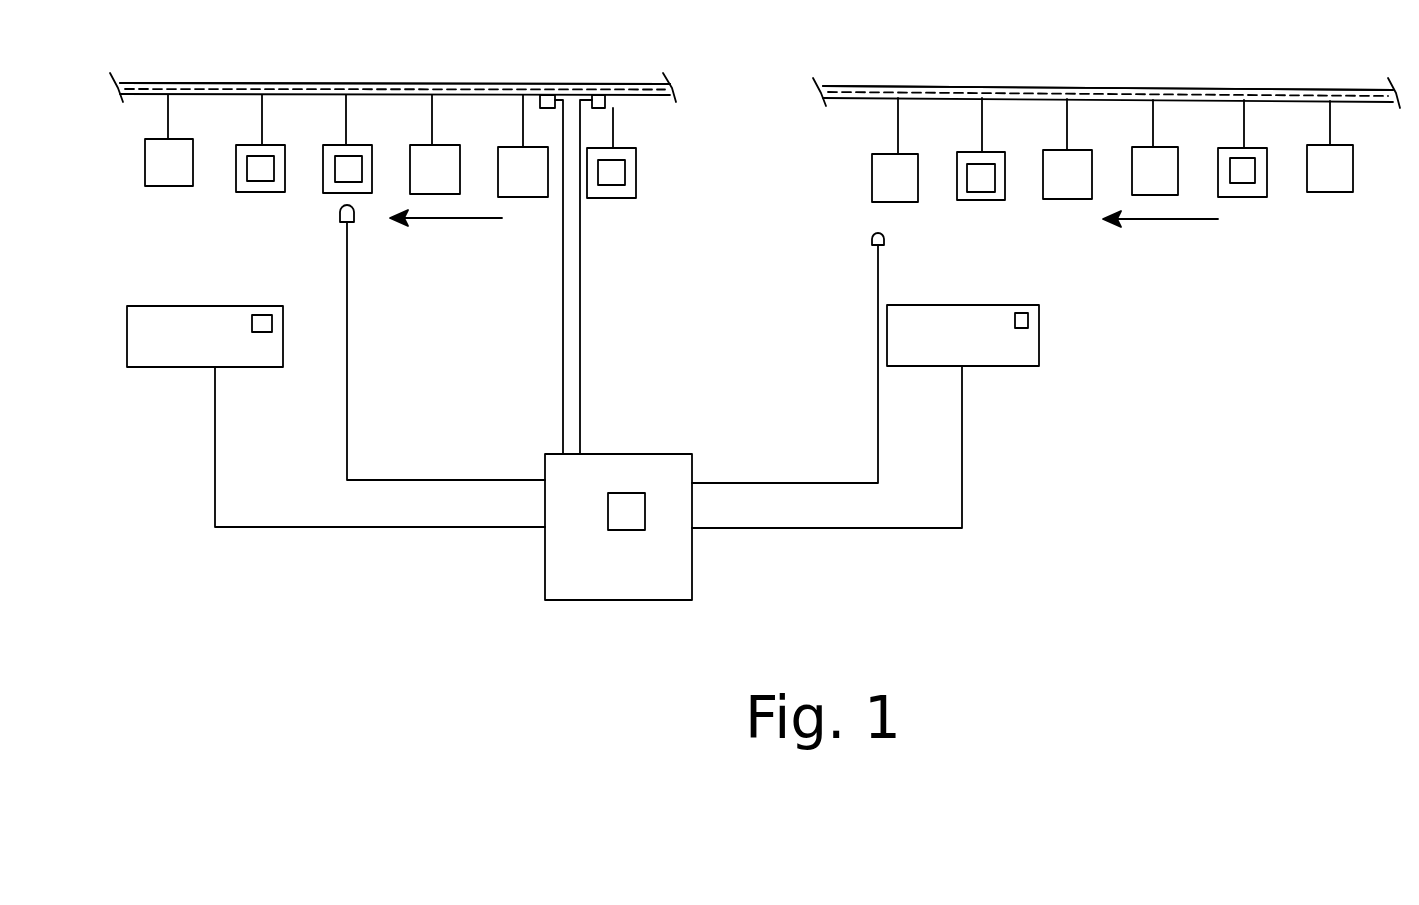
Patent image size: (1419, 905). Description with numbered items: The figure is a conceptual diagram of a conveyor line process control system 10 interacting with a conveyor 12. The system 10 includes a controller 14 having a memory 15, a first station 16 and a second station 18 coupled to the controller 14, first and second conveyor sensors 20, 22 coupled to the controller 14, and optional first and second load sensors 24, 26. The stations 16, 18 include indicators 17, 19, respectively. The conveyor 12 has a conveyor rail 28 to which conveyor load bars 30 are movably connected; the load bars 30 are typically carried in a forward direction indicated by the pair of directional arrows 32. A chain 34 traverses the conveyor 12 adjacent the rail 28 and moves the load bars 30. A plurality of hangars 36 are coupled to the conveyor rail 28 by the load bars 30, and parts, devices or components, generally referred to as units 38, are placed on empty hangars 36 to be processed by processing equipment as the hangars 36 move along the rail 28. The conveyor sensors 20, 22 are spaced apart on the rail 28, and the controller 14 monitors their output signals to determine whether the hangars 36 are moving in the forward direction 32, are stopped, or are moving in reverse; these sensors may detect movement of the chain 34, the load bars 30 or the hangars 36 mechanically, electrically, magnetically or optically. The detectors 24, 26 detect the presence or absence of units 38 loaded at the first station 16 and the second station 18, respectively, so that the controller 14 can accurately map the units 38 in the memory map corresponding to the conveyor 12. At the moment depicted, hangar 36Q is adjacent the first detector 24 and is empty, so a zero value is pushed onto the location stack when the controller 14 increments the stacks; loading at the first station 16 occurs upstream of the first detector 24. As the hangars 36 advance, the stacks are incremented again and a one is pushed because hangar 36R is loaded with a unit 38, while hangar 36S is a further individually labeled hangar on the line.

The conveyor line process control system 10 is at (1112, 543).
The conveyor 12 is at (298, 83).
The controller 14 is at (602, 580).
The memory 15 is at (622, 505).
The first station 16 is at (1006, 367).
The indicator 17 is at (1022, 313).
The second station 18 is at (151, 367).
The indicator 19 is at (258, 315).
The first conveyor sensor 20 is at (600, 100).
The second conveyor sensor 22 is at (542, 98).
The first load sensor 24 is at (886, 236).
The second load sensor 26 is at (337, 210).
The conveyor rail 28 is at (372, 82).
The conveyor load bars 30 is at (168, 112).
The directional arrows 32 is at (453, 220).
The chain 34 is at (410, 88).
The hangars 36 is at (162, 190).
The hangar 36Q is at (874, 182).
The hangar 36R is at (975, 203).
The hangar 36S is at (355, 145).
The units 38 is at (1265, 225).